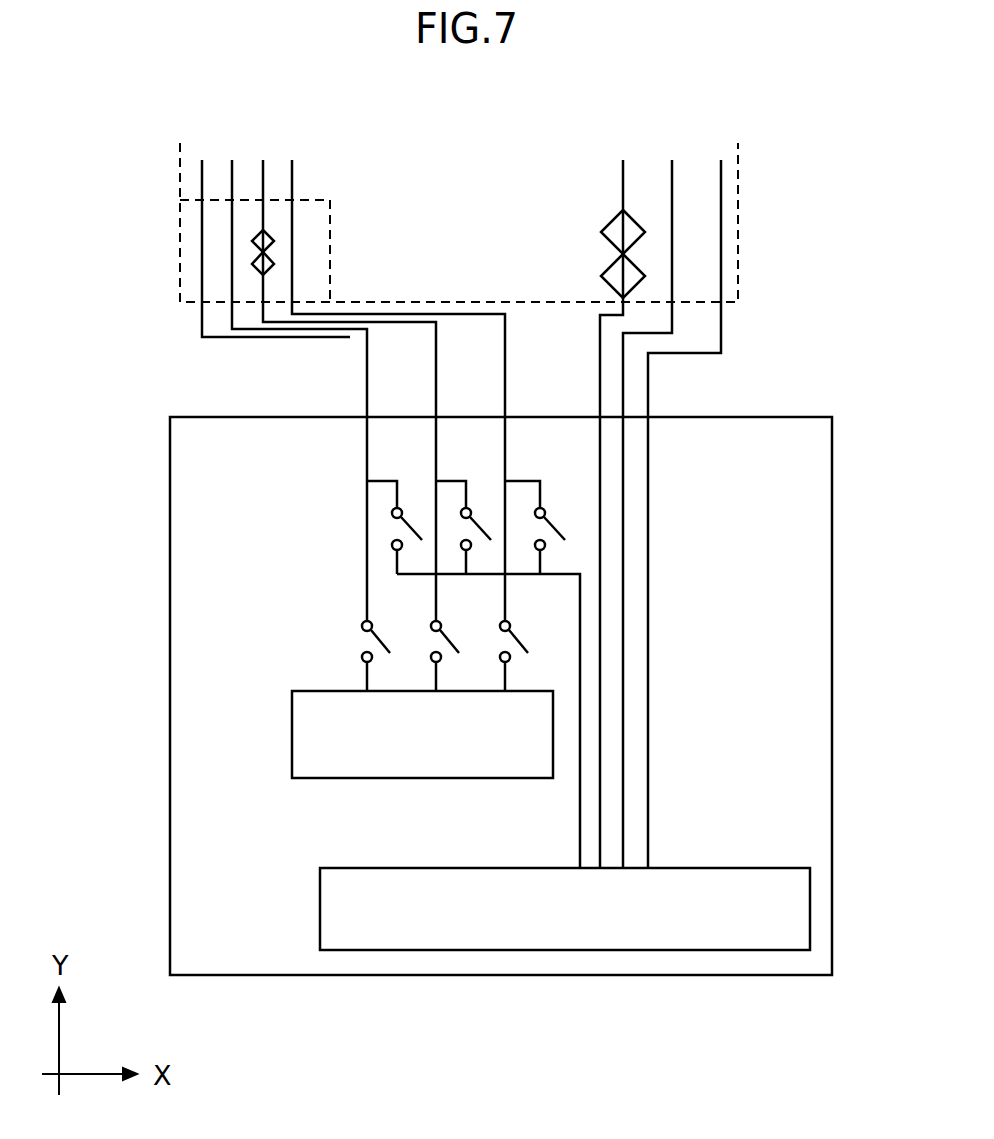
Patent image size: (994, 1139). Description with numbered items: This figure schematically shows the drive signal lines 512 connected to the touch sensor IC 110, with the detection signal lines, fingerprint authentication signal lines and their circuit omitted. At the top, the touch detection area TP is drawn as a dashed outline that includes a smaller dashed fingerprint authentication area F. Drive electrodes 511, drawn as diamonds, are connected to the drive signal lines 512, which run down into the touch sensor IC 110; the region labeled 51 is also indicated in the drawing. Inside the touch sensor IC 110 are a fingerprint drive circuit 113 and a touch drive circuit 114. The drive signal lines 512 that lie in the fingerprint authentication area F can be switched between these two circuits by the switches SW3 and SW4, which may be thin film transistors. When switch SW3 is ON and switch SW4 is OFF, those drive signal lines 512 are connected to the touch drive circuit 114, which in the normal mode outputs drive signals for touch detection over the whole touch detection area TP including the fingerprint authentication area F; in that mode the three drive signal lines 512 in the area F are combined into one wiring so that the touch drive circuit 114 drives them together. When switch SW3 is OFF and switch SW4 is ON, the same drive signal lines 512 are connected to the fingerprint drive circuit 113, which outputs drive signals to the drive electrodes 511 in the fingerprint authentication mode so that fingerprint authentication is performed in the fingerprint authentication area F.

The touch detection area TP is at (740, 178).
The fingerprint authentication area F is at (332, 250).
The drive signal line 512 is at (232, 172).
The drive electrode 511 is at (257, 238).
The touch sensor IC 110 is at (833, 538).
The touch sensor 51 is at (674, 514).
The switch SW3 is at (548, 497).
The switch SW4 is at (352, 634).
The fingerprint drive circuit 113 is at (343, 779).
The touch drive circuit 114 is at (808, 905).